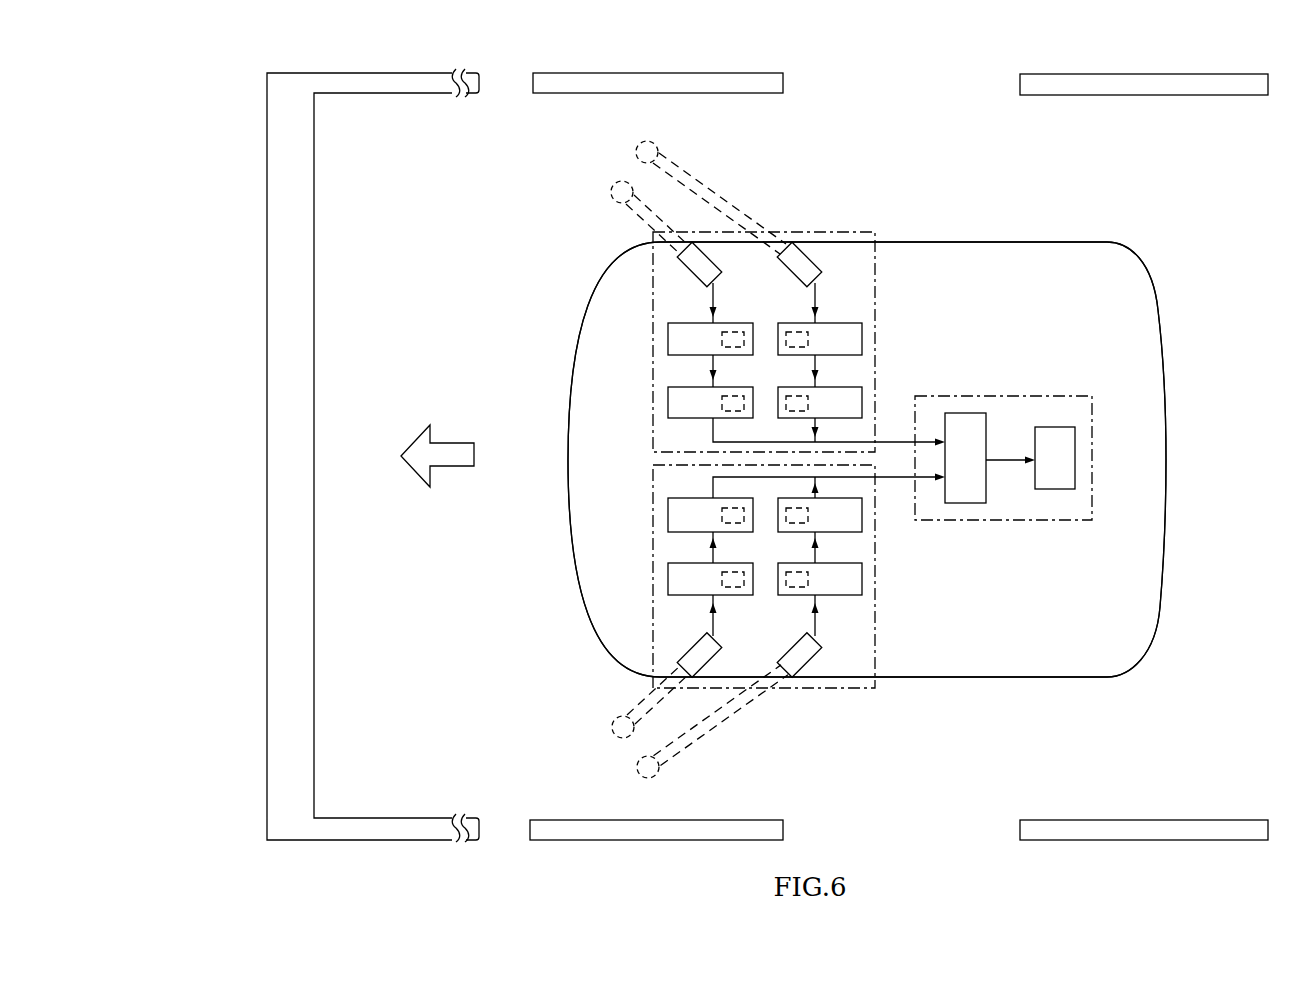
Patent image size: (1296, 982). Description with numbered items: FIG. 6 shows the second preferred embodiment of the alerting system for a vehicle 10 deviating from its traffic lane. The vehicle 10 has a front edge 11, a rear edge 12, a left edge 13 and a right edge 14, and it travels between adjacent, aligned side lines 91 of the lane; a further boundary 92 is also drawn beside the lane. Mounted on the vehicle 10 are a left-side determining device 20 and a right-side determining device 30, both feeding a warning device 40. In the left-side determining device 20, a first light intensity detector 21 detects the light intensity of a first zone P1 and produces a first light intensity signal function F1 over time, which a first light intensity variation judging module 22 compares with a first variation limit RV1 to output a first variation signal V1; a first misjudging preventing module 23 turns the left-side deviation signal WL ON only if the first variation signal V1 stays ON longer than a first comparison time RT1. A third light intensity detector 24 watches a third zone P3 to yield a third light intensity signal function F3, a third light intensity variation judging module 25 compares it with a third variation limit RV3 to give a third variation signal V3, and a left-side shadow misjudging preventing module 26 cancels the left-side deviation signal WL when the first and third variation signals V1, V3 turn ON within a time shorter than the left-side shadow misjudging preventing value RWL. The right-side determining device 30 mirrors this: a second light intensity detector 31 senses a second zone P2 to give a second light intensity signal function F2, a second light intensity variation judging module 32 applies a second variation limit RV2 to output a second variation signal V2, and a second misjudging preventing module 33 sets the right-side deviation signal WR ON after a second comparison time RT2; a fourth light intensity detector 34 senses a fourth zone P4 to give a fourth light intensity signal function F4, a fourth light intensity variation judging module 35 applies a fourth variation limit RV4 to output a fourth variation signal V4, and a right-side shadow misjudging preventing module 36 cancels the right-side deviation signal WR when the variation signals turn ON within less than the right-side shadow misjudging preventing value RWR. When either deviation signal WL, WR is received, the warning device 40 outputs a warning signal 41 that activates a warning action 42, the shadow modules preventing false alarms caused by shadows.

The vehicle 10 is at (1135, 238).
The front edge 11 is at (580, 337).
The rear edge 12 is at (1158, 316).
The left edge 13 is at (963, 678).
The right edge 14 is at (958, 242).
The left-side determining device 20 is at (879, 696).
The first light intensity detector 21 is at (688, 650).
The first light intensity variation judging module 22 is at (668, 572).
The first misjudging preventing module 23 is at (668, 518).
The third light intensity detector 24 is at (818, 658).
The third light intensity variation judging module 25 is at (862, 575).
The left-side shadow misjudging preventing module 26 is at (862, 515).
The right-side determining device 30 is at (877, 226).
The second light intensity detector 31 is at (687, 270).
The second light intensity variation judging module 32 is at (668, 335).
The second misjudging preventing module 33 is at (668, 400).
The fourth light intensity detector 34 is at (822, 266).
The fourth light intensity variation judging module 35 is at (862, 336).
The right-side shadow misjudging preventing module 36 is at (862, 402).
The warning device 40 is at (1098, 530).
The warning signal 41 is at (1003, 459).
The warning action 42 is at (1075, 450).
The side lines 91 is at (748, 80).
The wall 92 is at (285, 243).
The first zone P1 is at (612, 731).
The second zone P2 is at (611, 190).
The third zone P3 is at (640, 773).
The fourth zone P4 is at (636, 150).
The first light intensity signal function F1 is at (713, 618).
The second light intensity signal function F2 is at (713, 295).
The third light intensity signal function F3 is at (815, 625).
The fourth light intensity signal function F4 is at (815, 297).
The first variation signal V1 is at (713, 550).
The second variation signal V2 is at (713, 367).
The third variation signal V3 is at (815, 548).
The fourth variation signal V4 is at (815, 372).
The first variation limit RV1 is at (722, 580).
The second variation limit RV2 is at (722, 340).
The third variation limit RV3 is at (808, 582).
The fourth variation limit RV4 is at (808, 340).
The first comparison time RT1 is at (722, 513).
The second comparison time RT2 is at (722, 404).
The right-side shadow misjudging preventing value RWR is at (808, 403).
The left-side shadow misjudging preventing value RWL is at (808, 522).
The right-side deviation signal WR is at (893, 440).
The left-side deviation signal WL is at (893, 478).